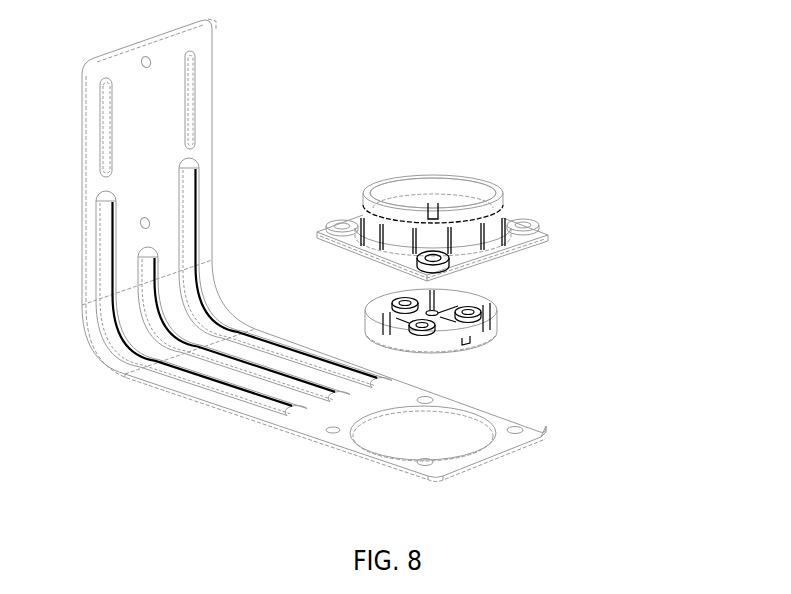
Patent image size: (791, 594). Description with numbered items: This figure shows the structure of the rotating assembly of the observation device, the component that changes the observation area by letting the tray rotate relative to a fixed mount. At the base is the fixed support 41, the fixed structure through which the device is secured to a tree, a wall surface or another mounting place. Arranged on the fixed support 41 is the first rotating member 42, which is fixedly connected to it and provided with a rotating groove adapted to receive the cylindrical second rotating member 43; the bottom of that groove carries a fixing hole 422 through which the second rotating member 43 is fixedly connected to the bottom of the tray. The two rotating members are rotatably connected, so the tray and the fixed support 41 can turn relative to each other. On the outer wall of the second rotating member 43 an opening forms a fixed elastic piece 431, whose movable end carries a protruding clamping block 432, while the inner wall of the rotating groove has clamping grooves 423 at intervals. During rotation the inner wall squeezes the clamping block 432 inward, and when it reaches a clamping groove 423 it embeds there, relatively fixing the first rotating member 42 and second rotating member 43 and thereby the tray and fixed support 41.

The fixed support 41 is at (530, 427).
The first rotating member 42 is at (545, 230).
The fixing hole 422 is at (460, 197).
The clamping groove 423 is at (434, 209).
The second rotating member 43 is at (484, 310).
The fixed elastic piece 431 is at (466, 339).
The clamping block 432 is at (483, 343).